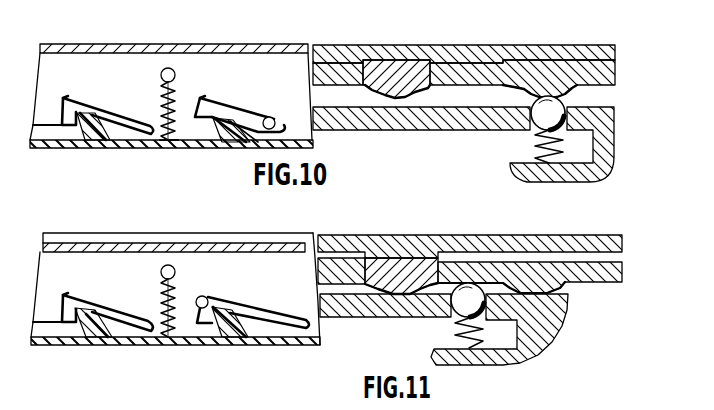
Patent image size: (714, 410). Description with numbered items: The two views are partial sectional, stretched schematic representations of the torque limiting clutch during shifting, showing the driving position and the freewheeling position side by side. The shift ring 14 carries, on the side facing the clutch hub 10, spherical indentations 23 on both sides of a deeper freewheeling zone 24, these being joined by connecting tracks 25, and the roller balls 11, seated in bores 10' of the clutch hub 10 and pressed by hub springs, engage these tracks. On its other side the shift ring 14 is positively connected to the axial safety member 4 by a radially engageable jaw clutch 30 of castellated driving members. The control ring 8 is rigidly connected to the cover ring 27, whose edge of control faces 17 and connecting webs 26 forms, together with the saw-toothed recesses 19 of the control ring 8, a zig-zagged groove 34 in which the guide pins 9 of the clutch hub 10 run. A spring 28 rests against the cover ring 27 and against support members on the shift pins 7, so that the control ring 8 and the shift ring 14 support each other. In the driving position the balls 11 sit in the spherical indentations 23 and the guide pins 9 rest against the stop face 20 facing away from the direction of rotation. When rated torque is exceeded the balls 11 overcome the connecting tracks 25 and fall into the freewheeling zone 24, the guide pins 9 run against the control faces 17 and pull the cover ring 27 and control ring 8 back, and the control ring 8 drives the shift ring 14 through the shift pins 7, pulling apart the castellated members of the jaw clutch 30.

In FIG. 10, the axial safety member 4 is at (448, 56).
In FIG. 10, the shift pins 7 is at (167, 68).
In FIG. 11, the shift pins 7 is at (168, 301).
In FIG. 11, the control ring 8 is at (263, 268).
In FIG. 10, the guide pins 9 is at (269, 117).
In FIG. 10, the clutch hub 10 is at (421, 137).
In FIG. 11, the clutch hub 10 is at (385, 305).
In FIG. 10, the bores 10' is at (518, 147).
In FIG. 11, the bores 10' is at (469, 333).
In FIG. 10, the roller balls 11 is at (545, 112).
In FIG. 10, the shift ring 14 is at (609, 88).
In FIG. 11, the shift ring 14 is at (499, 329).
In FIG. 10, the control faces 17 is at (107, 123).
In FIG. 11, the saw-toothed recesses 19 is at (248, 313).
In FIG. 11, the stop face 20 is at (323, 337).
In FIG. 10, the spherical indentations 23 is at (545, 94).
In FIG. 11, the spherical indentations 23 is at (418, 290).
In FIG. 11, the freewheeling zone 24 is at (443, 285).
In FIG. 10, the connecting tracks 25 is at (397, 100).
In FIG. 11, the connecting webs 26 is at (56, 322).
In FIG. 11, the cover ring 27 is at (100, 337).
In FIG. 10, the spring 28 is at (178, 118).
In FIG. 11, the jaw clutch 30 is at (542, 246).
In FIG. 10, the zig-zagged groove 34 is at (216, 98).